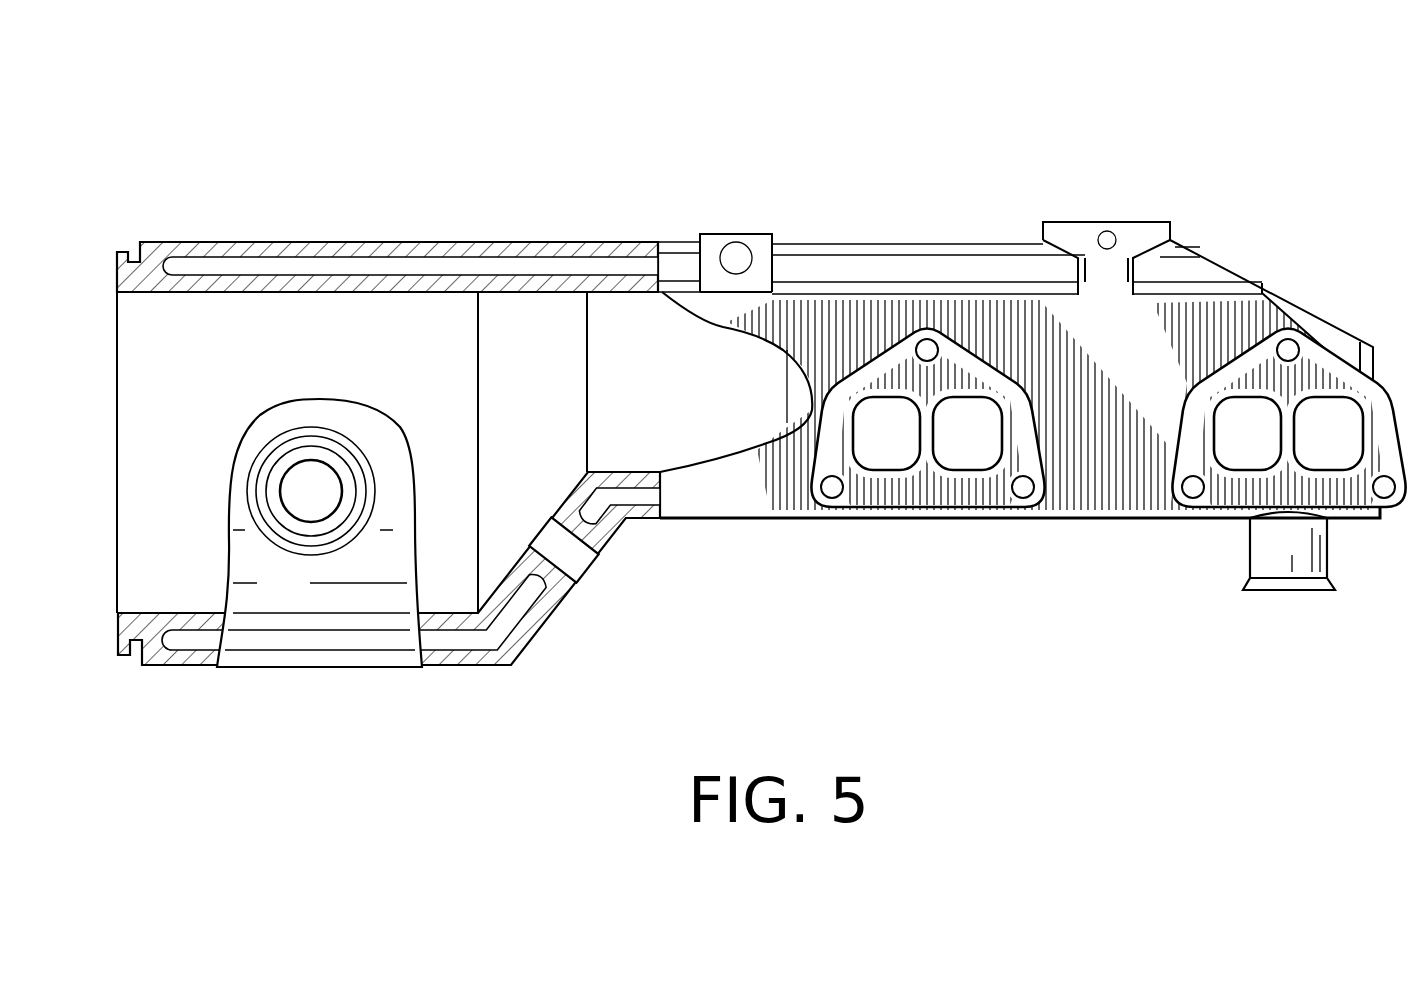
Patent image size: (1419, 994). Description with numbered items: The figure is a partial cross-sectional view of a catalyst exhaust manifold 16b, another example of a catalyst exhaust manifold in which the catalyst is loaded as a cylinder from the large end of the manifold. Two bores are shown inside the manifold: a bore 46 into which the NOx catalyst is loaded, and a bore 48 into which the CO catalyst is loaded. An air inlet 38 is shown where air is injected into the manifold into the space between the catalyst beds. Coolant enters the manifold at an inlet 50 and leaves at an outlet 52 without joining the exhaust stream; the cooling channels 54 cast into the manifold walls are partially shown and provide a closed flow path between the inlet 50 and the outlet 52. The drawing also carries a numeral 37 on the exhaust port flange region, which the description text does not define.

The catalyst exhaust manifold 16b is at (962, 160).
The port flange 37 is at (890, 455).
The air inlet 38 is at (596, 585).
The bore 46 is at (627, 333).
The bore 48 is at (345, 325).
The inlet 50 is at (318, 507).
The outlet 52 is at (1263, 547).
The cooling channels 54 is at (535, 268).